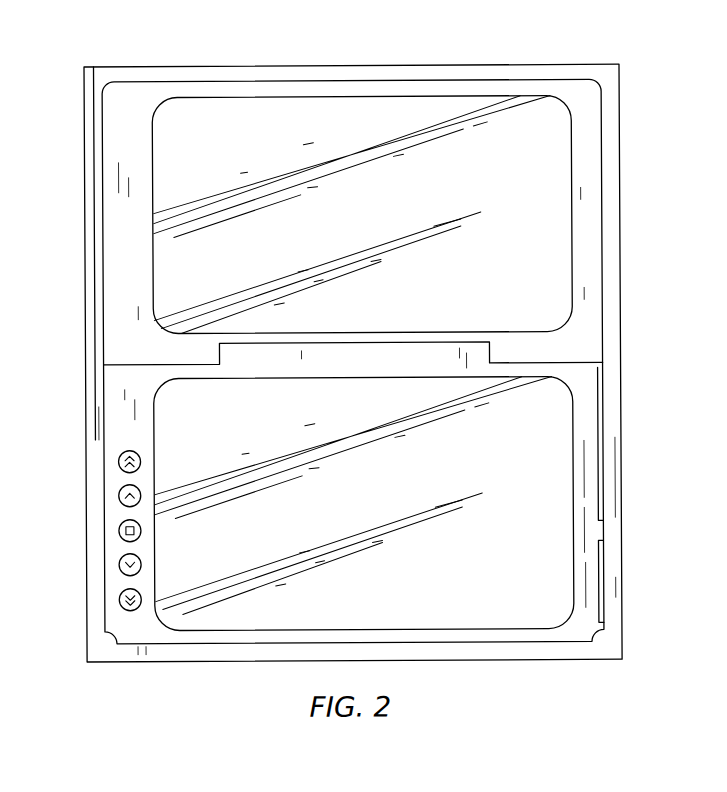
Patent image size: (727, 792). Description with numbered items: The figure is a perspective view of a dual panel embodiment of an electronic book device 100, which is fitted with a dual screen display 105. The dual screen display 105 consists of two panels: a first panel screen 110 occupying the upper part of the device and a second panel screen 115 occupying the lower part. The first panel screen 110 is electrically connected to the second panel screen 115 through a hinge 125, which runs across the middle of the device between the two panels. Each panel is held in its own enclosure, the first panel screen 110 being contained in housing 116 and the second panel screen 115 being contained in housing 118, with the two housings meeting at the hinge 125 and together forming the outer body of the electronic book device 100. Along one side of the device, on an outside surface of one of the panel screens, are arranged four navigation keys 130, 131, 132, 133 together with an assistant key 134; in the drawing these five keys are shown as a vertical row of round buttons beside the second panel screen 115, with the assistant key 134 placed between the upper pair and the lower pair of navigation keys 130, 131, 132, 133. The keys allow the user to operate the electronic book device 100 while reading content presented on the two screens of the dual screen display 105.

The electronic book device 100 is at (358, 63).
The dual screen display 105 is at (86, 415).
The first panel screen 110 is at (404, 108).
The second panel screen 115 is at (209, 624).
The housing 116 is at (123, 94).
The housing 118 is at (534, 640).
The hinge 125 is at (489, 354).
The navigation key 130 is at (115, 460).
The navigation key 131 is at (115, 496).
The navigation key 132 is at (115, 565).
The navigation key 133 is at (115, 600).
The assistant key 134 is at (115, 530).